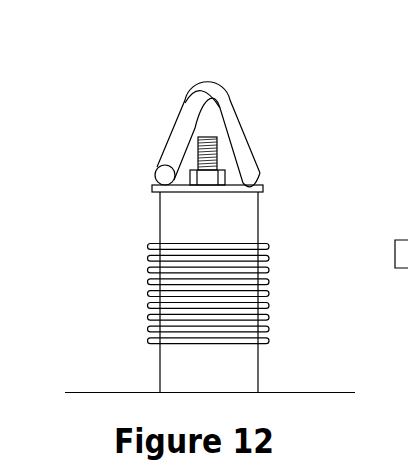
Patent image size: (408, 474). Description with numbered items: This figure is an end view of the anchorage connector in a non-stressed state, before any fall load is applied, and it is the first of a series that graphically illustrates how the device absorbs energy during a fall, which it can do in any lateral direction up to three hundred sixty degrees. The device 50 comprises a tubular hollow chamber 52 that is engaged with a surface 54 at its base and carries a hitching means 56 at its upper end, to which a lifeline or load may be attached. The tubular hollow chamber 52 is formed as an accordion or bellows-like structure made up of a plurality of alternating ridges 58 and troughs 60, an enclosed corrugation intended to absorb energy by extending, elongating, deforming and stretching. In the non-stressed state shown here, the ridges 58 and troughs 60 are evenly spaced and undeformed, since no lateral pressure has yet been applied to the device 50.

The device 50 is at (137, 217).
The tubular hollow chamber 52 is at (259, 204).
The surface 54 is at (277, 392).
The hitching means 56 is at (212, 77).
The ridges 58 is at (213, 280).
The troughs 60 is at (155, 291).